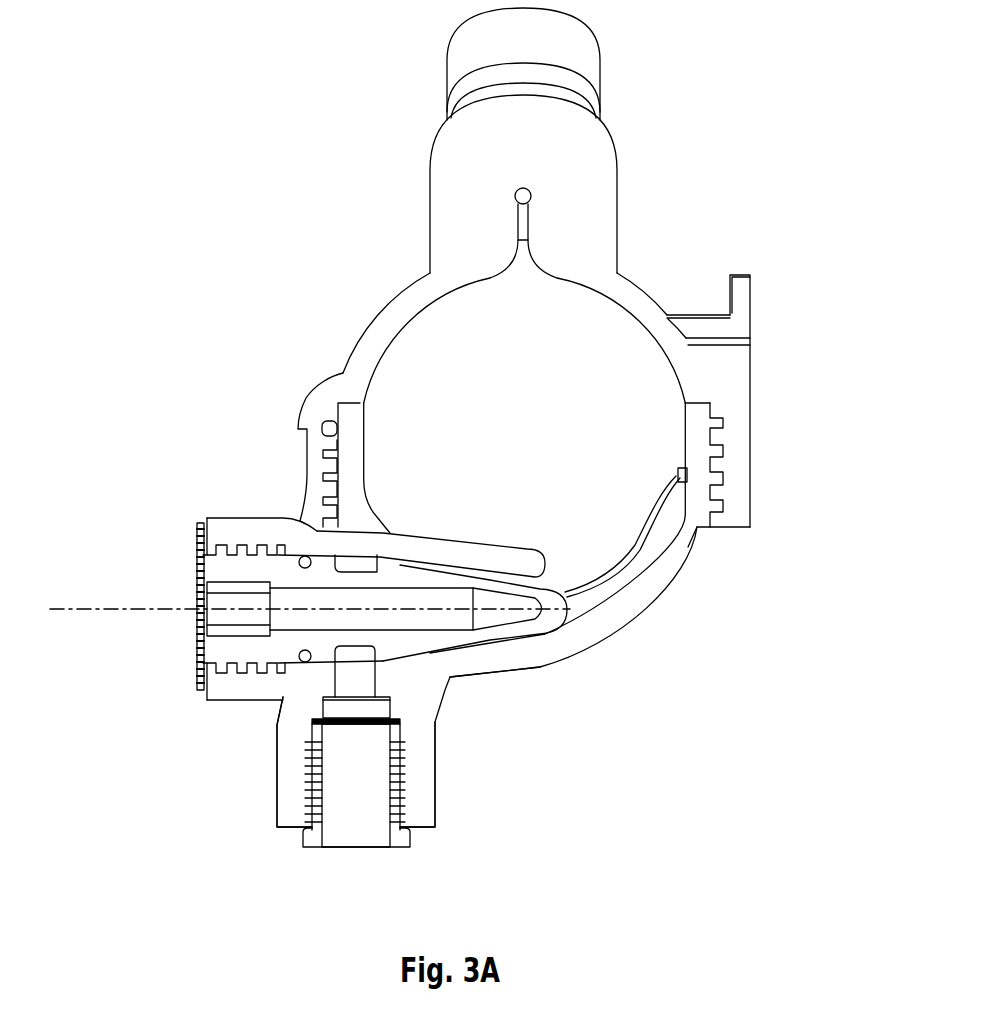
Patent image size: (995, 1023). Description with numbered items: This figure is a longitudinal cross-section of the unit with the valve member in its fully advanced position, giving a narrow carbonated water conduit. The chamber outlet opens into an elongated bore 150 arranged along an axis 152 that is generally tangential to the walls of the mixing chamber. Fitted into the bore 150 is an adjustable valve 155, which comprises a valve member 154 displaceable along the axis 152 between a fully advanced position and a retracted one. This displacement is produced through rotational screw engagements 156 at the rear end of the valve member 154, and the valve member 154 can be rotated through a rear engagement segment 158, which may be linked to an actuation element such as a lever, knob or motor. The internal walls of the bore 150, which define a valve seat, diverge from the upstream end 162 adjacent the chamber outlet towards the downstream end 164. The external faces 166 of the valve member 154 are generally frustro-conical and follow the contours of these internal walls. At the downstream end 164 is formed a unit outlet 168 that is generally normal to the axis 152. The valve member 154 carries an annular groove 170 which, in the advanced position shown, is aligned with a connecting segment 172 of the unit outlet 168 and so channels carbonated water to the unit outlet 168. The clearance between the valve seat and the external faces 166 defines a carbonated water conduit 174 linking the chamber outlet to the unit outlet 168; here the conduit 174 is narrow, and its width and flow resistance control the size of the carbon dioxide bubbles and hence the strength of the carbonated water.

The elongated bore 150 is at (443, 648).
The axis 152 is at (93, 610).
The valve member 154 is at (300, 597).
The adjustable valve 155 is at (177, 652).
The rotational screw engagements 156 is at (232, 547).
The rear engagement segment 158 is at (222, 603).
The upstream end 162 is at (533, 573).
The downstream end 164 is at (373, 660).
The external faces 166 is at (550, 622).
The unit outlet 168 is at (287, 770).
The annular groove 170 is at (358, 562).
The connecting segment 172 is at (357, 677).
The carbonated water conduit 174 is at (483, 645).